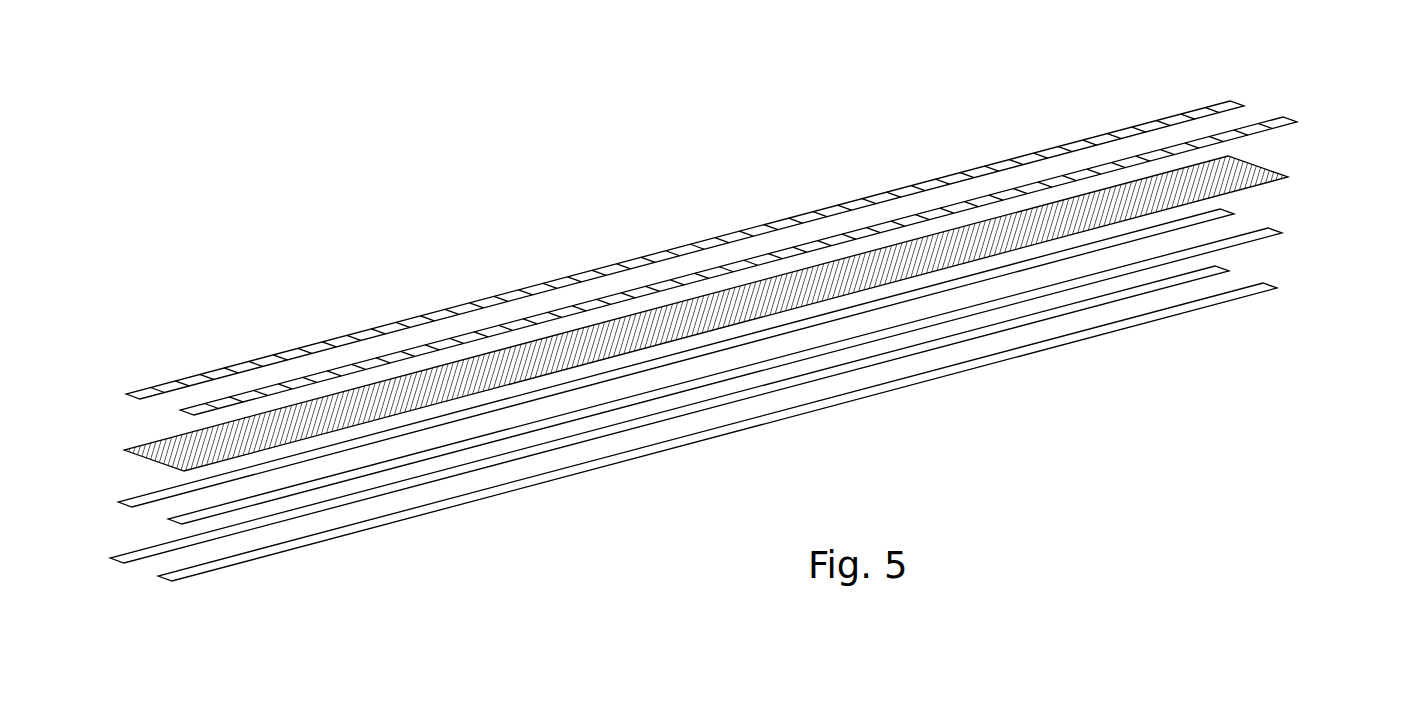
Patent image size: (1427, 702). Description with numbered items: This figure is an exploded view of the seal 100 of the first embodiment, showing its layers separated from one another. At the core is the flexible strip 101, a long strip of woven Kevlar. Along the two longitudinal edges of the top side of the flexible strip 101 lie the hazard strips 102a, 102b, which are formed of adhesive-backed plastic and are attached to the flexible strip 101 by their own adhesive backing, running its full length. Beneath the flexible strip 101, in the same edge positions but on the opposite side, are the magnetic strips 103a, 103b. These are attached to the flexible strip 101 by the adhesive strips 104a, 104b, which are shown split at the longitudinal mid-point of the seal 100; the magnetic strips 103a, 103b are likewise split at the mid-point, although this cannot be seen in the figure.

The seal 100 is at (761, 196).
The flexible strip 101 is at (1267, 167).
The hazard strip 102a is at (1290, 120).
The hazard strip 102b is at (1240, 103).
The magnetic strip 103a is at (1250, 297).
The magnetic strip 103b is at (1225, 265).
The adhesive strip 104a is at (1258, 239).
The adhesive strip 104b is at (1237, 212).